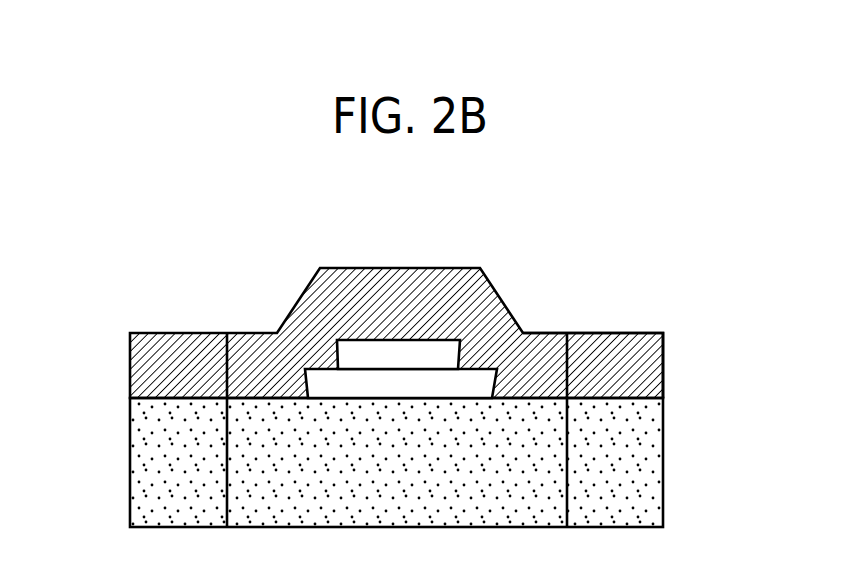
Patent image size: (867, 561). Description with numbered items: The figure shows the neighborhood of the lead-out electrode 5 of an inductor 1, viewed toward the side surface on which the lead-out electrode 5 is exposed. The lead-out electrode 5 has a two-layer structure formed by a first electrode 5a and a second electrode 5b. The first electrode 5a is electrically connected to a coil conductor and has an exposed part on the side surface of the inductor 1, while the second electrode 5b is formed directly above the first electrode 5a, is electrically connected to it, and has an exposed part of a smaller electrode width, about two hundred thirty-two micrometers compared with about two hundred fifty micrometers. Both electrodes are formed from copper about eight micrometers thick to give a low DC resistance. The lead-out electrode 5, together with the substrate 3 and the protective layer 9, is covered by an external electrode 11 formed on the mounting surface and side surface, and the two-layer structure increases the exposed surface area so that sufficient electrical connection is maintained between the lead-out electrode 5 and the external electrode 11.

The inductor 1 is at (150, 213).
The substrate 3 is at (650, 447).
The lead-out electrode 5 is at (401, 281).
The first electrode 5a is at (368, 382).
The second electrode 5b is at (422, 358).
The protective layer 9 is at (609, 338).
The external electrode 11 is at (228, 357).